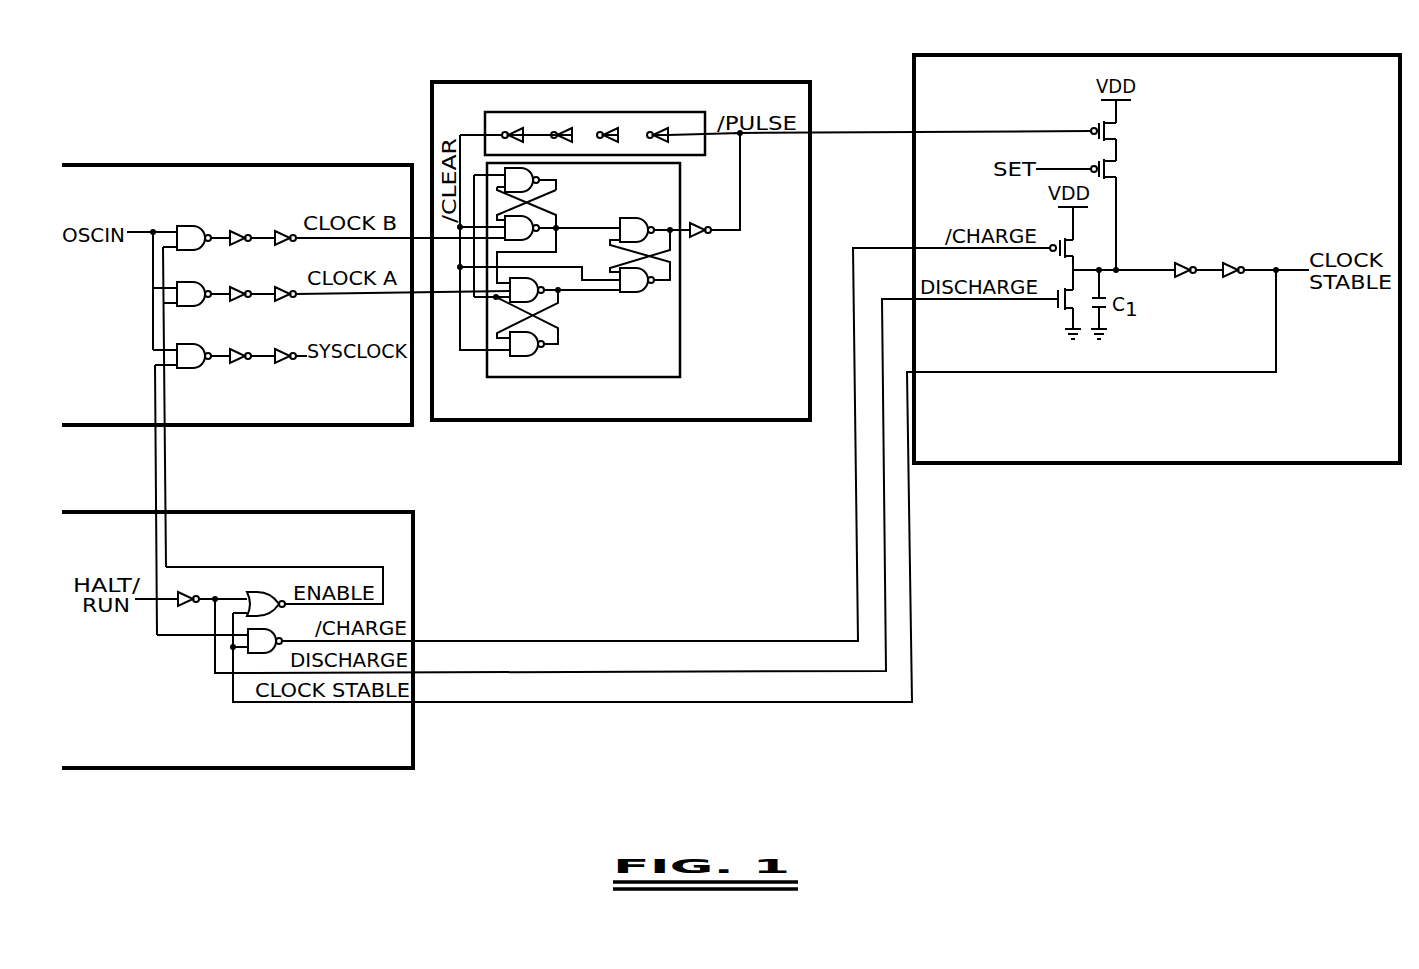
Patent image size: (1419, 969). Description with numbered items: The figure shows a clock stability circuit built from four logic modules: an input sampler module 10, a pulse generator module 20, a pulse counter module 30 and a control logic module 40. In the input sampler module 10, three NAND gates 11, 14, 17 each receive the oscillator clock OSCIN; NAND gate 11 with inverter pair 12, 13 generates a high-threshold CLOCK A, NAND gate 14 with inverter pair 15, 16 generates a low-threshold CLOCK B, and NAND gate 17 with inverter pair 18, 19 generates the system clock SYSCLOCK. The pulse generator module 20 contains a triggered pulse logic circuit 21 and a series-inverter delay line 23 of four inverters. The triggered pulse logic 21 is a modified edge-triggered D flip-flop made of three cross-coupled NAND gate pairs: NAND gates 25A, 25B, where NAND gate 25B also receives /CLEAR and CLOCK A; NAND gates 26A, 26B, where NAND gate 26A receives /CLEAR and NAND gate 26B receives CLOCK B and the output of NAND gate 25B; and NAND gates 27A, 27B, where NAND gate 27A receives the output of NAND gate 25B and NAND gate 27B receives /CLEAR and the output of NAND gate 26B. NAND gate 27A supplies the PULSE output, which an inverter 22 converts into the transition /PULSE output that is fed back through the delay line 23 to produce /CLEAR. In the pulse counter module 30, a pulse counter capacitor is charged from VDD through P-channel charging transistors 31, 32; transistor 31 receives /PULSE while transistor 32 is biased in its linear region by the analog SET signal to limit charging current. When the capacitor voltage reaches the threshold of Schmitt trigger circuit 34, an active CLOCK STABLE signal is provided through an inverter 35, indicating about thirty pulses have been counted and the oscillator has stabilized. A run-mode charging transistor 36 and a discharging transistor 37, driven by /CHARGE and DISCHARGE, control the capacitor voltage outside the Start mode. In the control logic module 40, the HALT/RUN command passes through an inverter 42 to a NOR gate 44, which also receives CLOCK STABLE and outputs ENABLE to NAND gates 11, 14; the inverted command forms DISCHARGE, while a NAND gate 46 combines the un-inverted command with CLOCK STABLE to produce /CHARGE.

The input sampler module 10 is at (231, 165).
The NAND gate 11 is at (198, 282).
The inverter 12 is at (242, 287).
The inverter 13 is at (285, 287).
The NAND gate 14 is at (190, 226).
The inverter 15 is at (240, 231).
The inverter 16 is at (285, 231).
The NAND gate 17 is at (195, 344).
The inverter 18 is at (242, 349).
The inverter 19 is at (285, 349).
The pulse generator module 20 is at (626, 82).
The triggered pulse logic circuit 21 is at (683, 334).
The inverter 22 is at (705, 240).
The series-inverter delay line 23 is at (666, 112).
The NAND gate 25A is at (545, 170).
The NAND gate 25B is at (553, 244).
The NAND gate 26A is at (548, 353).
The NAND gate 26B is at (556, 306).
The NAND gate 27A is at (641, 218).
The NAND gate 27B is at (641, 293).
The pulse counter module 30 is at (1162, 55).
The transition pulse detection charging transistor 31 is at (1113, 137).
The charging transistor 32 is at (1113, 175).
The Schmitt trigger circuit 34 is at (1185, 263).
The inverter 35 is at (1240, 263).
The run-mode charging transistor 36 is at (1068, 250).
The discharging transistor 37 is at (1073, 313).
The control logic module 40 is at (414, 566).
The inverter 42 is at (190, 605).
The NOR gate 44 is at (257, 590).
The NAND gate 46 is at (271, 628).